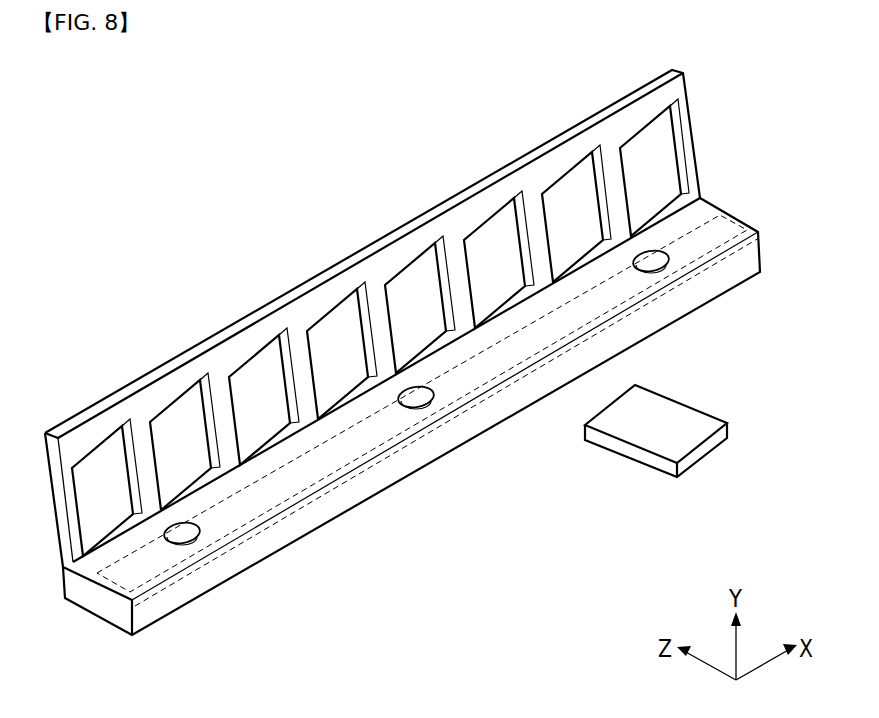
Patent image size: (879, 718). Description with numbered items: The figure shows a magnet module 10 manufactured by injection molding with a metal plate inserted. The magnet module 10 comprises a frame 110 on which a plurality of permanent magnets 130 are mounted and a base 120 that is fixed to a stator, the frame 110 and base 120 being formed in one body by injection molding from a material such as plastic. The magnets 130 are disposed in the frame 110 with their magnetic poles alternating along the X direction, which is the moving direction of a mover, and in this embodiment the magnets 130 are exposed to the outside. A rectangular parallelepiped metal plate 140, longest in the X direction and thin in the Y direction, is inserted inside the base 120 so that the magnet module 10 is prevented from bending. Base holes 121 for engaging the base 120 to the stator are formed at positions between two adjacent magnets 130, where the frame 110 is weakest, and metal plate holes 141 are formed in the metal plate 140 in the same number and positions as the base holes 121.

The magnet module 10 is at (176, 258).
The frame 110 is at (366, 248).
The base 120 is at (308, 522).
The base hole 121 is at (437, 395).
The permanent magnet 130 is at (668, 137).
The metal plate 140 is at (733, 223).
The metal plate hole 141 is at (417, 403).